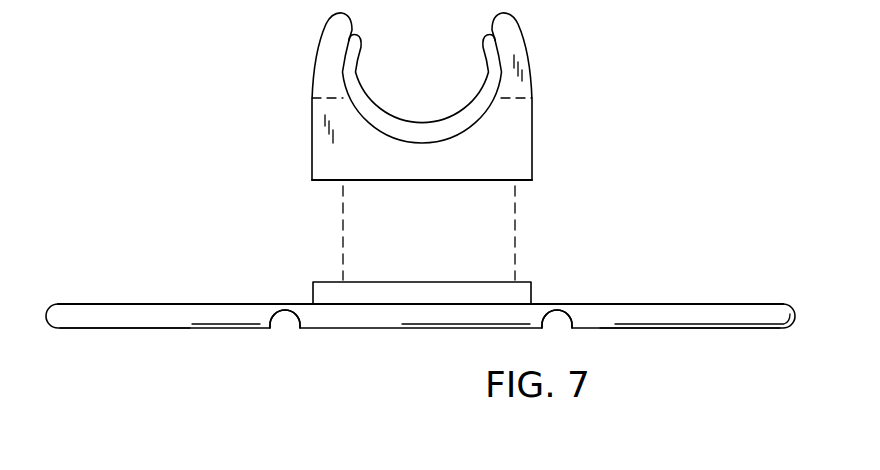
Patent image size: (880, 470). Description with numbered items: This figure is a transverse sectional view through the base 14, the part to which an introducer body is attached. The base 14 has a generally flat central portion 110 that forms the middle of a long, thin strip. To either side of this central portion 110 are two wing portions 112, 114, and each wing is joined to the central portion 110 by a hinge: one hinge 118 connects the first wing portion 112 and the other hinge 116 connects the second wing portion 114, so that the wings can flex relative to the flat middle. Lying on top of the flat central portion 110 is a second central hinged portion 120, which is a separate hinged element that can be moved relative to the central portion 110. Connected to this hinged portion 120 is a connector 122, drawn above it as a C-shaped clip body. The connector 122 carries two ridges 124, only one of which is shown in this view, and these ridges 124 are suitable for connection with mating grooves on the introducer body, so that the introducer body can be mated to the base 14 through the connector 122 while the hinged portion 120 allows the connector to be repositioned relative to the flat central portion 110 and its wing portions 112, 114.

The base 14 is at (290, 350).
The central portion 110 is at (404, 313).
The wing portion 112 is at (158, 320).
The wing portion 114 is at (664, 318).
The hinge 116 is at (562, 303).
The hinge 118 is at (287, 303).
The second central hinged portion 120 is at (410, 287).
The connector 122 is at (520, 147).
The ridge 124 is at (485, 59).